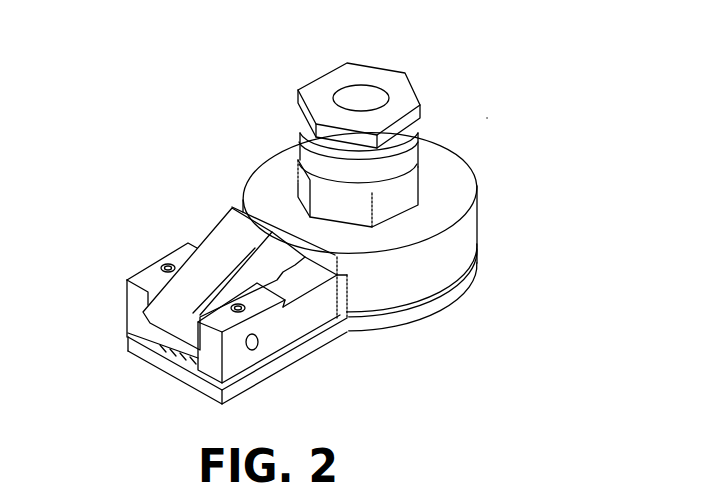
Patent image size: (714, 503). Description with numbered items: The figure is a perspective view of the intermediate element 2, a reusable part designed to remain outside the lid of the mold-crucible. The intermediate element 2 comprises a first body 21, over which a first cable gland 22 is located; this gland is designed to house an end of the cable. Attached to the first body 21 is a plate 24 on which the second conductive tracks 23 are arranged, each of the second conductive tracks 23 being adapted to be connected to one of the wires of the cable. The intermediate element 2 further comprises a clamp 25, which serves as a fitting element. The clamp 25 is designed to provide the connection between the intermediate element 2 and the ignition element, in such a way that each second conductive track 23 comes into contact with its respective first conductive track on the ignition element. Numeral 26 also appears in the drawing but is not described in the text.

The intermediate element 2 is at (487, 118).
The first body 21 is at (443, 263).
The first cable gland 22 is at (372, 77).
The second conductive tracks 23 is at (187, 360).
The plate 24 is at (300, 348).
The clamp 25 is at (163, 238).
The wedge 26 is at (232, 250).